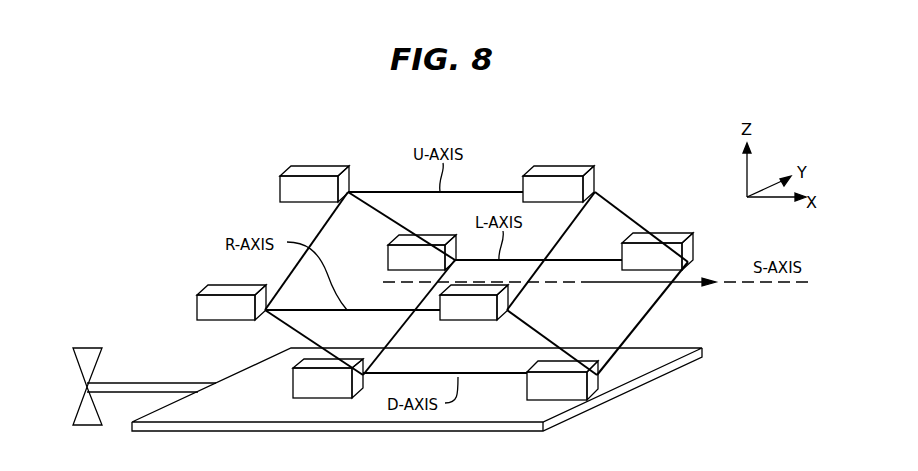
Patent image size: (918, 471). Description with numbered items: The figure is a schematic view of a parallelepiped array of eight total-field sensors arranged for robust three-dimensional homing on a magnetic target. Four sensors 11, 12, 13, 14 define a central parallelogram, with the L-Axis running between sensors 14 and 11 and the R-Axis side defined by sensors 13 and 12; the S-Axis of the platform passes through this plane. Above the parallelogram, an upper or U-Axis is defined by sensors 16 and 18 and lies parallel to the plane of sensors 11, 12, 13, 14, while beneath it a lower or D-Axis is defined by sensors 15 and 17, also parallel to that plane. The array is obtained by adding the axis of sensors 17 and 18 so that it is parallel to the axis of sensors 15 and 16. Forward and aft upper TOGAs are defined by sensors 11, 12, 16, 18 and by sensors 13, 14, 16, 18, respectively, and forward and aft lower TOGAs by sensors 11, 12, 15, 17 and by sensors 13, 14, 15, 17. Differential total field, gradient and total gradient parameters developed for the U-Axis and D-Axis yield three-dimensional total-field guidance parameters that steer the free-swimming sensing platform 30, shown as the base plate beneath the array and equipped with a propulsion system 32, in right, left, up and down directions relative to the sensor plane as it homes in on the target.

The total-field sensor 11 is at (672, 233).
The total-field sensor 12 is at (455, 320).
The total-field sensor 13 is at (197, 310).
The total-field sensor 14 is at (388, 258).
The total-field sensor 15 is at (300, 360).
The total-field sensor 16 is at (312, 166).
The total-field sensor 17 is at (592, 380).
The total-field sensor 18 is at (562, 166).
The free-swimming sensing platform 30 is at (176, 432).
The propulsion system 32 is at (84, 348).